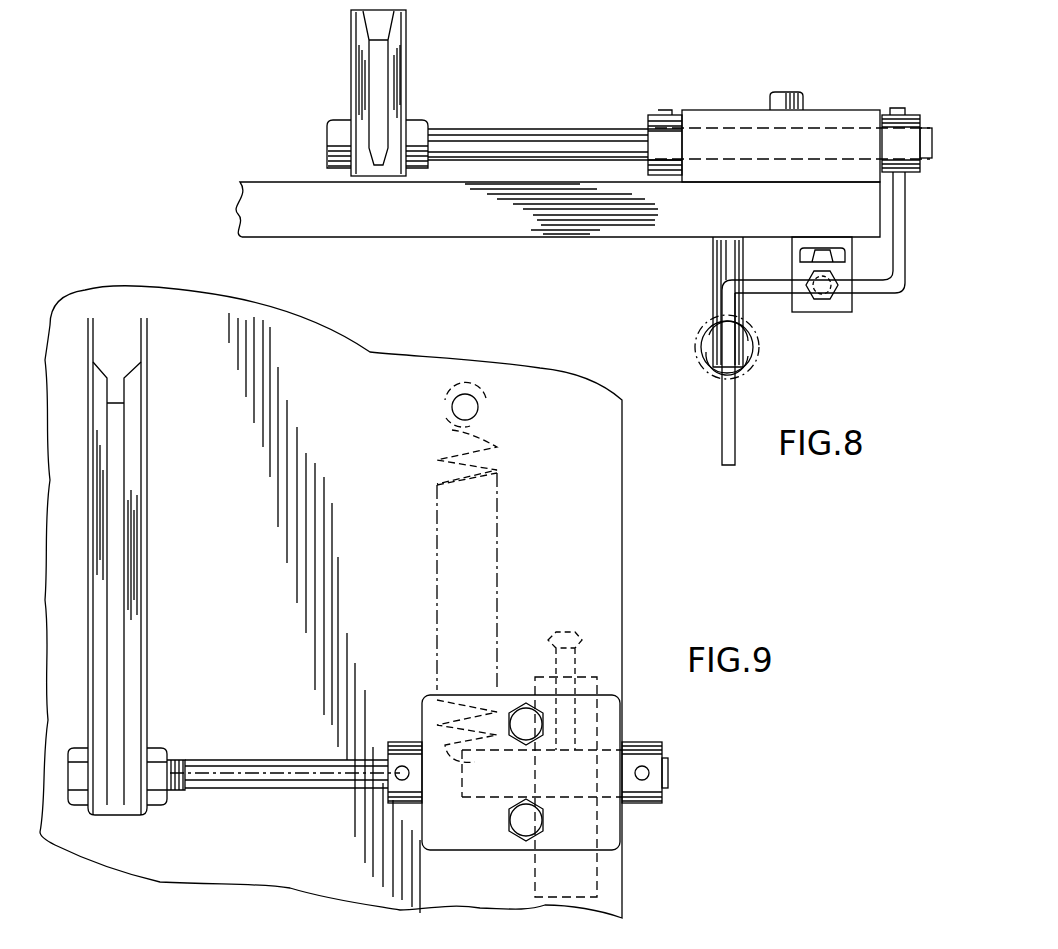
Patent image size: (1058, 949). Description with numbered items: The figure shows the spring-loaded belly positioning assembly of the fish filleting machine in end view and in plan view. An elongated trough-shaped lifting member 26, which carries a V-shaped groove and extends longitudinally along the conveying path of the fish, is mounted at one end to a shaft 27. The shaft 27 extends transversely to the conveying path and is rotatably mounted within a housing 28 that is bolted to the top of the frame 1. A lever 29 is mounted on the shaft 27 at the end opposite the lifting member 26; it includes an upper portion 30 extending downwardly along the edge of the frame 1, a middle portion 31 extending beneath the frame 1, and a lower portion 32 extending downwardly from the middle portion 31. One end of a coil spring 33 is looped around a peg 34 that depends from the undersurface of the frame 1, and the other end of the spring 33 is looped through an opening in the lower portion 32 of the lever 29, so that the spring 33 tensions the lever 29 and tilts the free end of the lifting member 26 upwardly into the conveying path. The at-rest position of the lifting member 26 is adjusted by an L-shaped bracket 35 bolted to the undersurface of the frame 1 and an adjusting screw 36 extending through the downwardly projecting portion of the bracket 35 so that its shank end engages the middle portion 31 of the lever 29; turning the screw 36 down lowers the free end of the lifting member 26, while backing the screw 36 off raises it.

In FIG. 8, the frame 1 is at (450, 238).
In FIG. 9, the frame 1 is at (373, 429).
In FIG. 8, the lifting member 26 is at (408, 58).
In FIG. 9, the lifting member 26 is at (148, 558).
In FIG. 8, the shaft 27 is at (538, 132).
In FIG. 9, the shaft 27 is at (252, 760).
In FIG. 8, the housing 28 is at (729, 110).
In FIG. 9, the housing 28 is at (425, 695).
In FIG. 8, the lever 29 is at (921, 114).
In FIG. 9, the lever 29 is at (662, 802).
In FIG. 8, the upper portion 30 is at (904, 230).
In FIG. 8, the middle portion 31 is at (770, 293).
In FIG. 8, the lower portion 32 is at (722, 422).
In FIG. 8, the coil spring 33 is at (697, 352).
In FIG. 9, the coil spring 33 is at (498, 568).
In FIG. 8, the peg 34 is at (712, 258).
In FIG. 9, the peg 34 is at (478, 413).
In FIG. 8, the L-shaped bracket 35 is at (832, 312).
In FIG. 9, the L-shaped bracket 35 is at (600, 858).
In FIG. 8, the adjusting screw 36 is at (836, 298).
In FIG. 9, the adjusting screw 36 is at (582, 642).